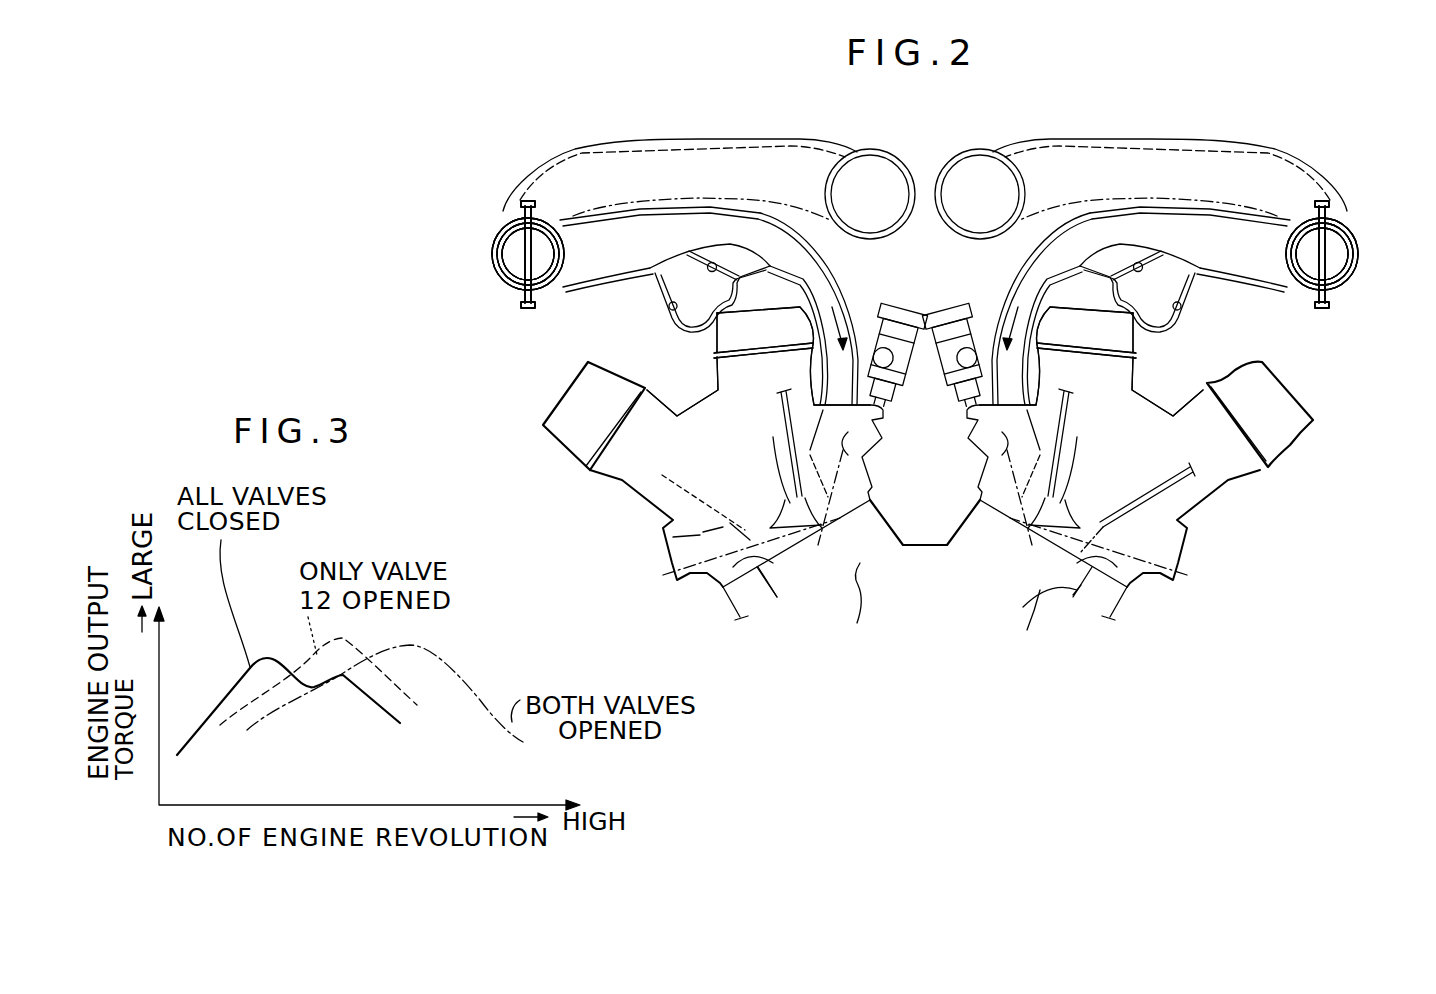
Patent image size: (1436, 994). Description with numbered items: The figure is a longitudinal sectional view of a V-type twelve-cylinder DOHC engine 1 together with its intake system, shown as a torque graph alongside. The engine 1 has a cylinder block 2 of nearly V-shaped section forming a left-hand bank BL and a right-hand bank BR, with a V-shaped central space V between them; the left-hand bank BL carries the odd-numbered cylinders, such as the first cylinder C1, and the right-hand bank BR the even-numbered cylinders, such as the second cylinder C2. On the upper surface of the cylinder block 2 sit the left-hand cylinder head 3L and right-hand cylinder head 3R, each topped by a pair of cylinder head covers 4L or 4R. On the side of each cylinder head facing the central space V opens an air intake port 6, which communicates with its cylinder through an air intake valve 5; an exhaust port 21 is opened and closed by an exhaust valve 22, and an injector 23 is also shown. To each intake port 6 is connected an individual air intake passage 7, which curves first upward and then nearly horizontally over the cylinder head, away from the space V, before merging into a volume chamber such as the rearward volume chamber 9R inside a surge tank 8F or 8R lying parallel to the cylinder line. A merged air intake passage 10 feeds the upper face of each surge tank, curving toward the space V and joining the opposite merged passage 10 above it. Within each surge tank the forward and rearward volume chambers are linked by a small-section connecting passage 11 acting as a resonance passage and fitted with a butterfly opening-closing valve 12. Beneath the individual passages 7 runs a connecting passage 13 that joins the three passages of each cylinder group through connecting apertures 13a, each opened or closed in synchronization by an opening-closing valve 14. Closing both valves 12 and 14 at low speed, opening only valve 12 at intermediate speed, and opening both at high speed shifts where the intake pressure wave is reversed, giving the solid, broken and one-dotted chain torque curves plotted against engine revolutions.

The V-type 12-cylinder DOHC engine 1 is at (523, 409).
The cylinder block 2 is at (923, 541).
The left-hand cylinder head 3L is at (590, 472).
The right-hand cylinder head 3R is at (1230, 487).
The left-hand cylinder head cover 4L is at (700, 350).
The right-hand cylinder head cover 4R is at (1150, 343).
The air intake valve 5 is at (768, 432).
The air intake port 6 is at (875, 447).
The individual air intake passage 7 is at (828, 281).
The surge tank 8F is at (493, 246).
The surge tank 8R is at (1362, 233).
The rearward volume chamber 9R is at (496, 283).
The merged air intake passage 10 is at (674, 138).
The connecting passage 11 is at (521, 283).
The opening-closing valve 12 is at (558, 296).
The connecting passage 13 is at (672, 327).
The connecting aperture 13a is at (733, 215).
The opening-closing valve 14 is at (653, 287).
The exhaust port 21 is at (668, 577).
The exhaust valve 22 is at (662, 475).
The injector 23 is at (923, 312).
The left-hand bank BL is at (646, 568).
The right-hand bank BR is at (1207, 573).
The V-shaped central space V is at (925, 536).
The first cylinder C1 is at (821, 617).
The second cylinder C2 is at (1142, 626).